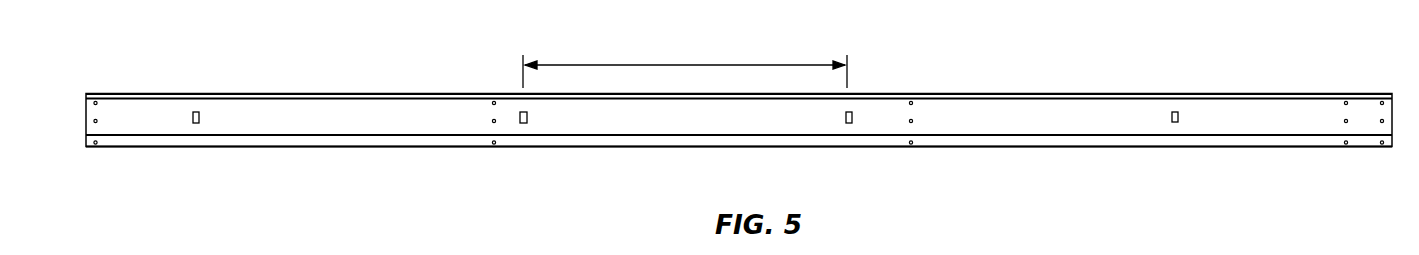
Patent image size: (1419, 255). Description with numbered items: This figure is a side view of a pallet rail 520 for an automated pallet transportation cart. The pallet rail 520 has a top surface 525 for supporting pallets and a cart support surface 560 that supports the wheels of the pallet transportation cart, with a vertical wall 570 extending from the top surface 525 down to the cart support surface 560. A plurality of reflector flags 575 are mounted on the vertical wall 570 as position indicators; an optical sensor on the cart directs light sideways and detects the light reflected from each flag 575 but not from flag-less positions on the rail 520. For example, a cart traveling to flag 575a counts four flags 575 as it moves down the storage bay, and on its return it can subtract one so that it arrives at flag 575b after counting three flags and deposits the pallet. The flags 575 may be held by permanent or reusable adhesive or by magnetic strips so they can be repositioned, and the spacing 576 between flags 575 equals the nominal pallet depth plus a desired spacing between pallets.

The pallet rail 520 is at (86, 118).
The top surface 525 is at (315, 93).
The cart support surface 560 is at (315, 135).
The vertical wall 570 is at (1082, 124).
The reflector flags 575 is at (200, 115).
The flag 575a is at (1179, 114).
The flag 575b is at (853, 115).
The spacing 576 is at (615, 65).